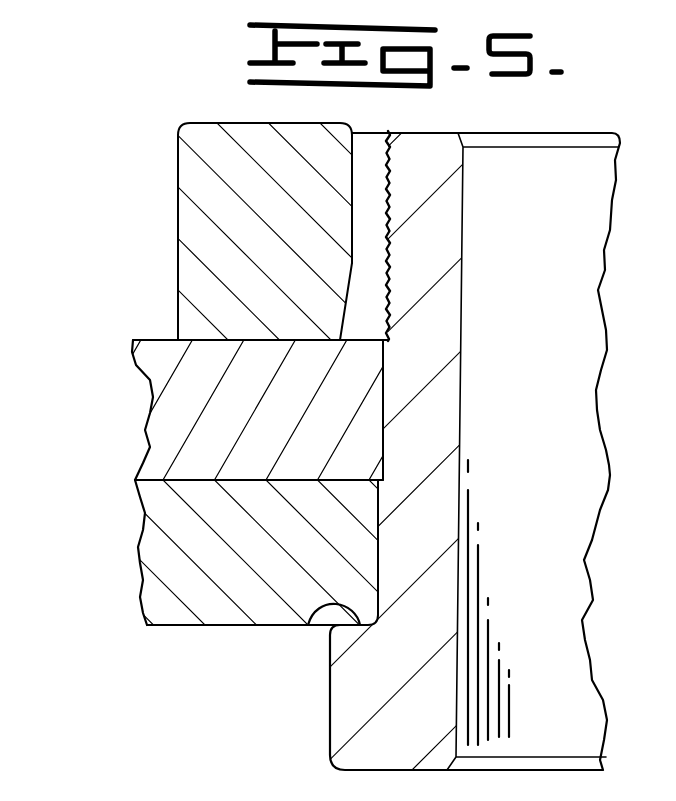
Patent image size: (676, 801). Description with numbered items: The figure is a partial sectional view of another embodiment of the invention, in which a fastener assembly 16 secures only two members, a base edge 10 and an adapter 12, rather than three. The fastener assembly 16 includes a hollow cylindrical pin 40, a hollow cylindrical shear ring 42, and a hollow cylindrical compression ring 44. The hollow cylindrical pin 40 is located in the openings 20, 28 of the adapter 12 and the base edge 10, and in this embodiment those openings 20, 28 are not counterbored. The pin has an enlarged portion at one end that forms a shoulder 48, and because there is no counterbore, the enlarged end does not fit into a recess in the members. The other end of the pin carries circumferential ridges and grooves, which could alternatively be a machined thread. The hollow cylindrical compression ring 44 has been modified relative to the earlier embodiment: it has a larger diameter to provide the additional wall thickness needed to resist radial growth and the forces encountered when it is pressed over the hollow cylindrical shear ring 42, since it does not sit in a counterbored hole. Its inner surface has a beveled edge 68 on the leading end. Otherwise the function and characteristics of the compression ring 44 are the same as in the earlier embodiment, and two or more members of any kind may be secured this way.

The base edge 10 is at (163, 527).
The adapter 12 is at (175, 396).
The fastener assembly 16 is at (155, 106).
The opening 20 is at (385, 416).
The opening 28 is at (385, 552).
The hollow cylindrical pin 40 is at (436, 327).
The hollow cylindrical shear ring 42 is at (375, 170).
The hollow cylindrical compression ring 44 is at (205, 196).
The shoulder 48 is at (315, 625).
The beveled edge 68 is at (350, 302).